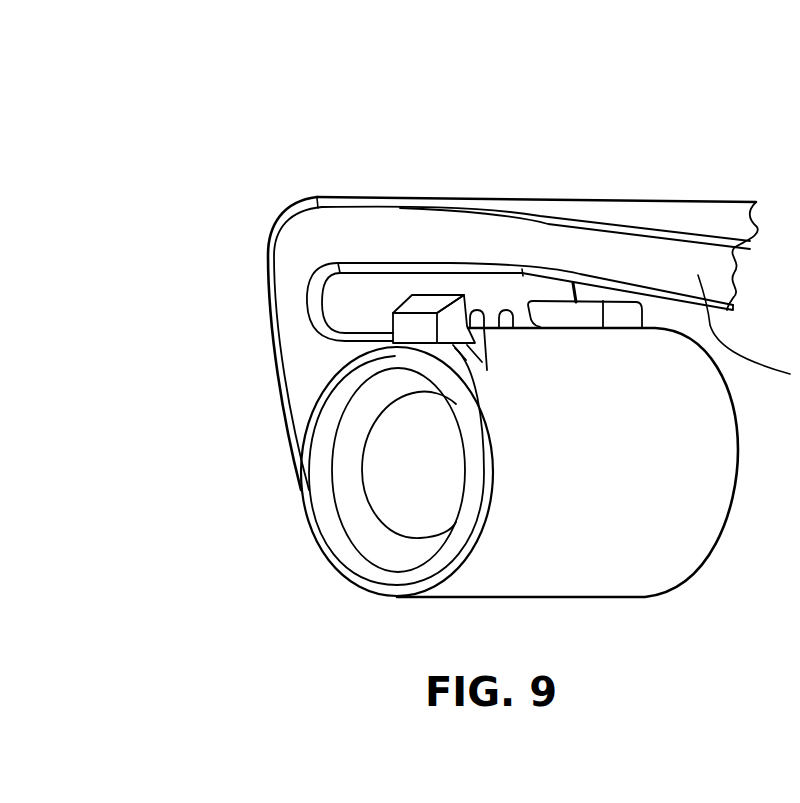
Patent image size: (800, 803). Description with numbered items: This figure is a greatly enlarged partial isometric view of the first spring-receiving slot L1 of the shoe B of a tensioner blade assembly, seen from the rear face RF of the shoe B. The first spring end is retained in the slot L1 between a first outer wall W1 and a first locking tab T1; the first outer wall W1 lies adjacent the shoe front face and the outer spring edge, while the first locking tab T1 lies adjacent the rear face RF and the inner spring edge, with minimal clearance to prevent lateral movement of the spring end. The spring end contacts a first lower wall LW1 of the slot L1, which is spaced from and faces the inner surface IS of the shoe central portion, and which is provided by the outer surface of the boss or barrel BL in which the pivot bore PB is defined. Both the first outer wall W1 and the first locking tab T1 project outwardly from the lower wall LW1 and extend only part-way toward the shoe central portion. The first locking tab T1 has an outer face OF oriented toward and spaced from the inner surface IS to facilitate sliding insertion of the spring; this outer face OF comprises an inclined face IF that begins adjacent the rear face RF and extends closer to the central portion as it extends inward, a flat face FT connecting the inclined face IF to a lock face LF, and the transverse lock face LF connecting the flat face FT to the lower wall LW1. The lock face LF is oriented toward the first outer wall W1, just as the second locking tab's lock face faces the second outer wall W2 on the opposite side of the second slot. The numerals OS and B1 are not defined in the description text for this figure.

The shoe B is at (338, 147).
The outer sheet OS is at (702, 210).
The outer wall of band B1 is at (292, 319).
The rear face RF is at (635, 254).
The inner surface IS is at (413, 292).
The first spring-receiving slot L1 is at (502, 290).
The outer face OF is at (428, 298).
The flat face FT is at (443, 295).
The first locking tab T1 is at (466, 312).
The inclined face IF is at (393, 313).
The pivot bore PB is at (405, 493).
The lock face LF is at (489, 345).
The boss or barrel BL is at (622, 570).
The first outer wall W1 is at (588, 318).
The first lower wall LW1 is at (513, 330).
The second outer wall W2 is at (749, 471).